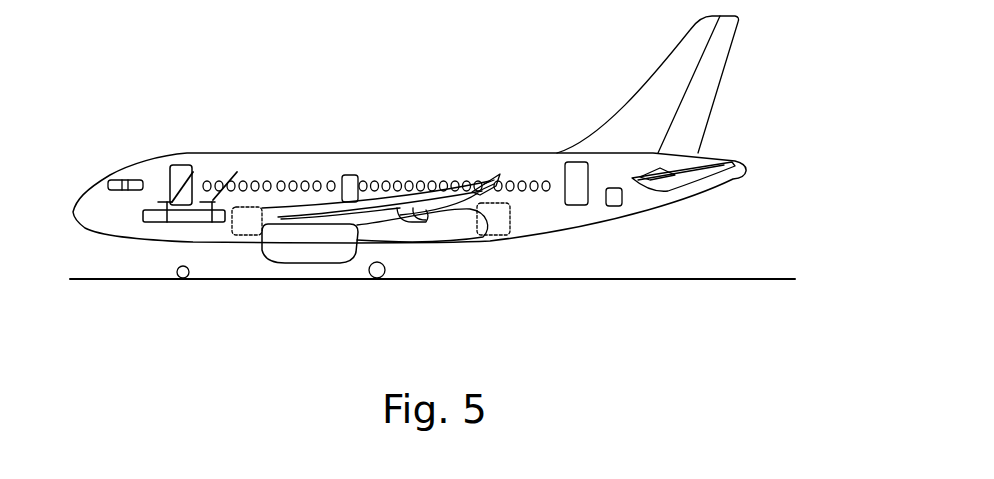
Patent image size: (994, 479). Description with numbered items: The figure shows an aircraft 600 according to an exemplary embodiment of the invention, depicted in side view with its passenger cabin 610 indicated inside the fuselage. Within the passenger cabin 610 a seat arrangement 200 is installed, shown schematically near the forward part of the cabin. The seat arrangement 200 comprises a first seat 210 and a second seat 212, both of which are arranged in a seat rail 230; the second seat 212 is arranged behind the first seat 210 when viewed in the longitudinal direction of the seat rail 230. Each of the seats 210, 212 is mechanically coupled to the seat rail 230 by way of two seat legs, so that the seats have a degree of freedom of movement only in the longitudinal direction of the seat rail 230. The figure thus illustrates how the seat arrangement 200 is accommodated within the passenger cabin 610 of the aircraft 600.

The aircraft 600 is at (400, 113).
The passenger cabin 610 is at (517, 153).
The seat arrangement 200 is at (166, 225).
The first seat 210 is at (180, 165).
The second seat 212 is at (234, 172).
The seat rail 230 is at (153, 203).